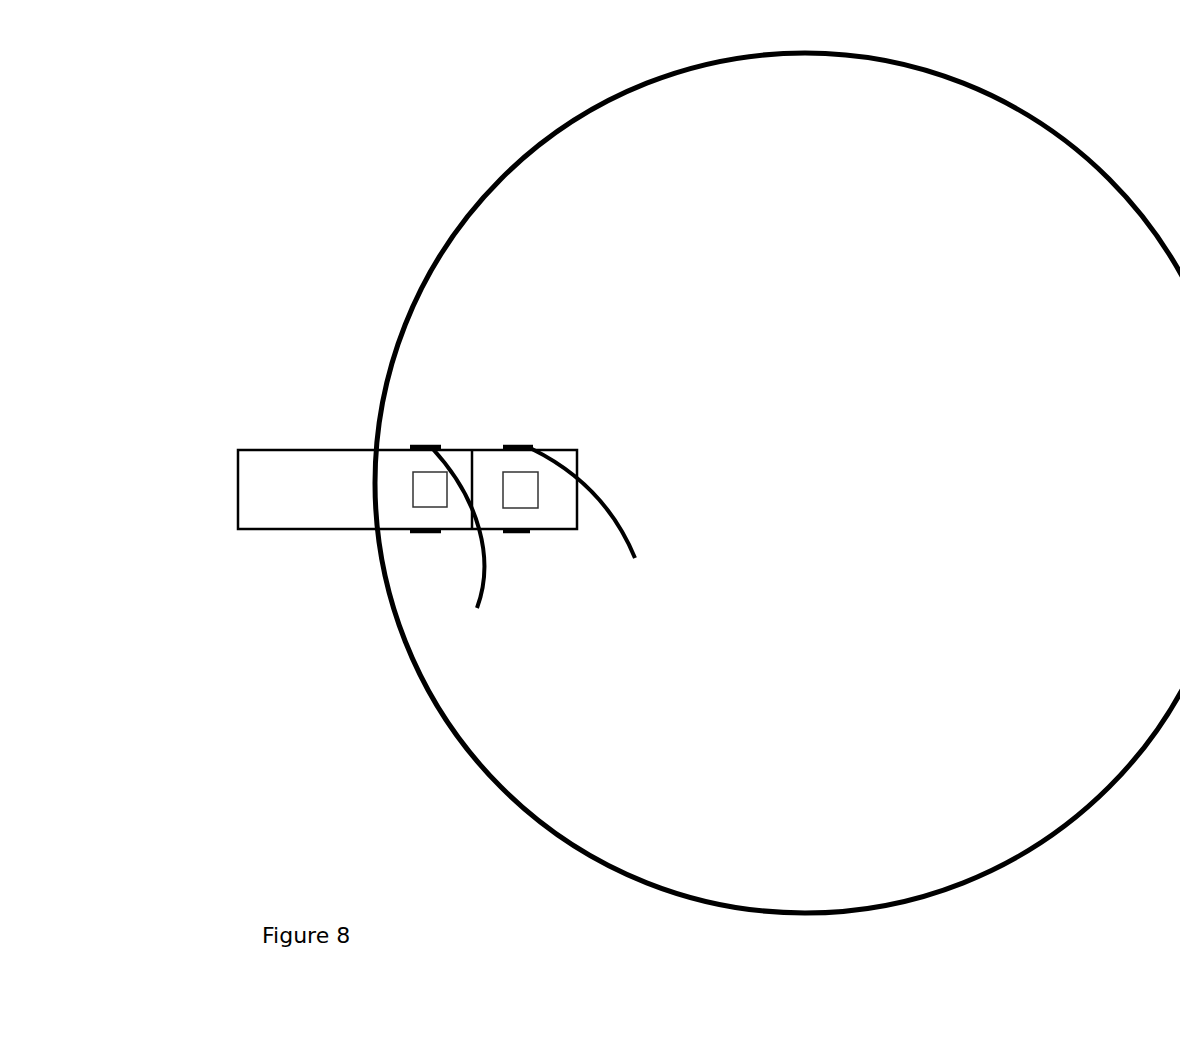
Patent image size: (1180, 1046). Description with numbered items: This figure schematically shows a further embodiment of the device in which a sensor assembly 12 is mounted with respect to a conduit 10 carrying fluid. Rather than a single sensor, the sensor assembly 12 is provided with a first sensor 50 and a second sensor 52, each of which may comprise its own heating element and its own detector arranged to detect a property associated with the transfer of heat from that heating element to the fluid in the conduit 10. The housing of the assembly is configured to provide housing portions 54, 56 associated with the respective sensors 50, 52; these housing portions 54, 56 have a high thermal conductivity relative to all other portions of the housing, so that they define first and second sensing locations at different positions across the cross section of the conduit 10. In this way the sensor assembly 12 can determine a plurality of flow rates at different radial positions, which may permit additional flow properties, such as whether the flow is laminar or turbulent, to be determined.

The conduit 10 is at (537, 145).
The sensor assembly 12 is at (300, 529).
The first sensor 50 is at (523, 473).
The second sensor 52 is at (410, 492).
The housing portion 54 is at (419, 531).
The housing portion 56 is at (528, 530).